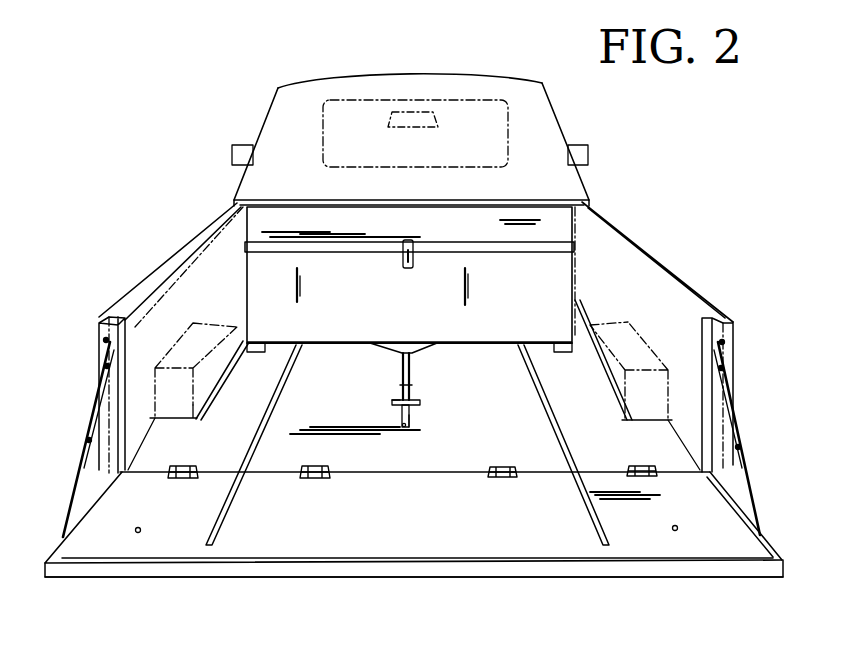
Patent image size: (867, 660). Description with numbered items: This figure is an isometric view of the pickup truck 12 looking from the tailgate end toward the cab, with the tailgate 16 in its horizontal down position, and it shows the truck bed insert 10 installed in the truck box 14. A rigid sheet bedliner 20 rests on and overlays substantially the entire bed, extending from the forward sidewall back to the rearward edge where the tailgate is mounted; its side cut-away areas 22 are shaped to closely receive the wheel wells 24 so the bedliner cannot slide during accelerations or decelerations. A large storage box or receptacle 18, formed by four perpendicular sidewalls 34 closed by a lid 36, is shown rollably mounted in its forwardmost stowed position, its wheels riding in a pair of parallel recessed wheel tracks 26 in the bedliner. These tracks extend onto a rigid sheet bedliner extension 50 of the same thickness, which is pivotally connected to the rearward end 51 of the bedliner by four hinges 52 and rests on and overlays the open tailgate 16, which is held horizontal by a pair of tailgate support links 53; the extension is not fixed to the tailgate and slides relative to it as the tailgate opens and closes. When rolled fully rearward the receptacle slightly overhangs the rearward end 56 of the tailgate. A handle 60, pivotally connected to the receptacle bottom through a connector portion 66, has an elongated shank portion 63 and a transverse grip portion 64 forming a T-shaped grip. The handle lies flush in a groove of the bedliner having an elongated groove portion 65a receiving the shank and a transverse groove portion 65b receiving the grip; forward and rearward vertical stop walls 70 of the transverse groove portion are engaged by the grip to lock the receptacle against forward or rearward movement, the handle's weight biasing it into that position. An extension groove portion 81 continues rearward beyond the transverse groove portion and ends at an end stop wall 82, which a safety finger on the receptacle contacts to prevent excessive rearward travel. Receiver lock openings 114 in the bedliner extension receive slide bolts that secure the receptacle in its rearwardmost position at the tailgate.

The truck bed insert 10 is at (635, 172).
The pickup truck 12 is at (464, 73).
The truck box 14 is at (174, 250).
The tailgate 16 is at (57, 547).
The storage box or receptacle 18 is at (563, 222).
The rigid sheet bedliner 20 is at (416, 388).
The side cut-away areas 22 is at (223, 381).
The wheel wells 24 is at (200, 323).
The wheel tracks 26 is at (270, 408).
The sidewalls 34 is at (425, 315).
The lid 36 is at (282, 227).
The bedliner extension 50 is at (760, 537).
The rearward end of the bedliner 51 is at (393, 474).
The hinges 52 is at (185, 479).
The tailgate support links 53 is at (88, 450).
The rearward end of the tailgate 56 is at (664, 577).
The handle 60 is at (420, 397).
The shank portion 63 is at (412, 375).
The grip portion 64 is at (413, 356).
The elongated groove portion 65a is at (402, 356).
The transverse groove portion 65b is at (392, 402).
The connector portion 66 is at (428, 342).
The vertical stop walls 70 is at (425, 402).
The extension groove portion 81 is at (413, 424).
The end stop wall 82 is at (403, 424).
The receiver lock openings 114 is at (140, 527).